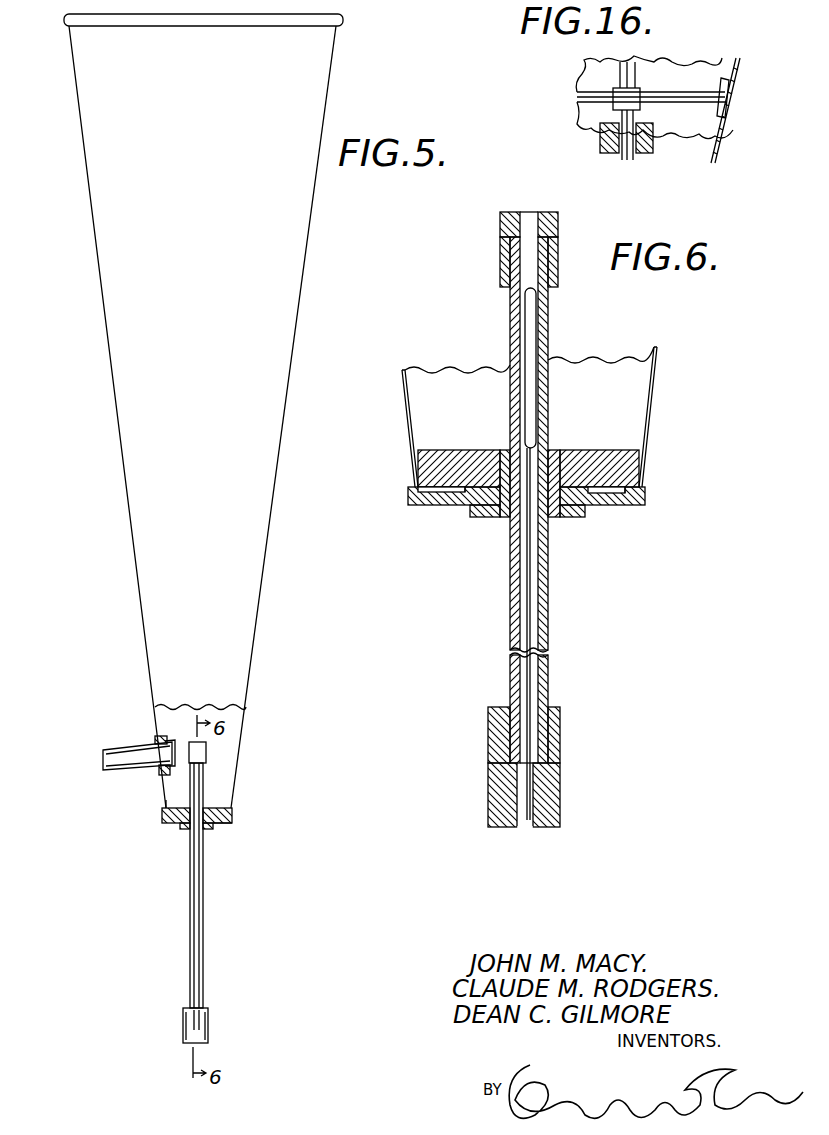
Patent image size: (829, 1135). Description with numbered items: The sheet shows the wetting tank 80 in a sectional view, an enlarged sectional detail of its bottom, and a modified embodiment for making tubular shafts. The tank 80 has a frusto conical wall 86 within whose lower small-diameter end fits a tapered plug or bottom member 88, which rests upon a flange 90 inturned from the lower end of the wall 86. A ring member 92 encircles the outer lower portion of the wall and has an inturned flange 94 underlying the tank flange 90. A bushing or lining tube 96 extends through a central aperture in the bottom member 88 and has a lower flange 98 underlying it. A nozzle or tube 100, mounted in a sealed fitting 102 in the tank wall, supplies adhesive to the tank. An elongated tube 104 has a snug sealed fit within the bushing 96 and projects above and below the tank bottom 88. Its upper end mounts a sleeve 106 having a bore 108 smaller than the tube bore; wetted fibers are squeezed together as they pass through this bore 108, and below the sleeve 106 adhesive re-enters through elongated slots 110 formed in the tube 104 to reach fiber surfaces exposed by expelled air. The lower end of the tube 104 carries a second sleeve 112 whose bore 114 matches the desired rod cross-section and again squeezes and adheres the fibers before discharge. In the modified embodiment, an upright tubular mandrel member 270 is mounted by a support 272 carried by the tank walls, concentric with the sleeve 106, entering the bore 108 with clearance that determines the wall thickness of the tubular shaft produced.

In FIG. 5, the tank 80 is at (124, 486).
In FIG. 5, the frusto conical wall 86 is at (240, 737).
In FIG. 16, the frusto conical wall 86 is at (721, 134).
In FIG. 6, the frusto conical wall 86 is at (655, 374).
In FIG. 5, the tapered plug or bottom member 88 is at (168, 806).
In FIG. 6, the tapered plug or bottom member 88 is at (605, 455).
In FIG. 6, the flange 90 is at (616, 506).
In FIG. 5, the ring member 92 is at (232, 816).
In FIG. 6, the ring member 92 is at (645, 477).
In FIG. 5, the inturned flange 94 is at (216, 824).
In FIG. 6, the inturned flange 94 is at (610, 505).
In FIG. 6, the bushing or lining tube 96 is at (505, 455).
In FIG. 5, the lower flange 98 is at (185, 829).
In FIG. 6, the lower flange 98 is at (484, 517).
In FIG. 5, the nozzle or tube 100 is at (123, 758).
In FIG. 5, the sealed fitting 102 is at (156, 740).
In FIG. 5, the elongated tube 104 is at (197, 790).
In FIG. 6, the elongated tube 104 is at (548, 336).
In FIG. 5, the sleeve 106 is at (206, 752).
In FIG. 16, the sleeve 106 is at (600, 137).
In FIG. 6, the sleeve 106 is at (500, 232).
In FIG. 16, the bore 108 is at (635, 158).
In FIG. 6, the bore 108 is at (529, 222).
In FIG. 6, the elongated opening or slots 110 is at (529, 327).
In FIG. 5, the second sleeve 112 is at (208, 1020).
In FIG. 6, the second sleeve 112 is at (560, 785).
In FIG. 6, the bore 114 is at (526, 826).
In FIG. 16, the mandrel member 270 is at (627, 72).
In FIG. 16, the support 272 is at (690, 97).